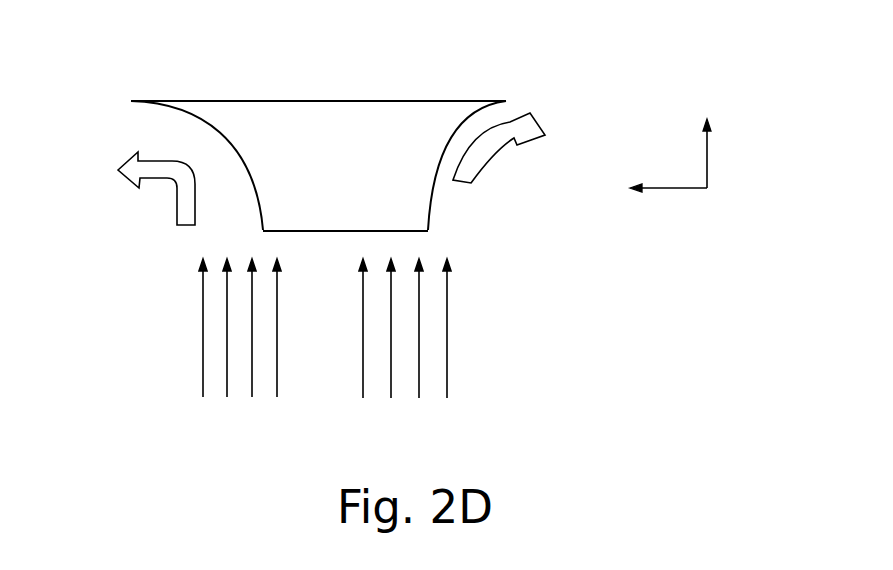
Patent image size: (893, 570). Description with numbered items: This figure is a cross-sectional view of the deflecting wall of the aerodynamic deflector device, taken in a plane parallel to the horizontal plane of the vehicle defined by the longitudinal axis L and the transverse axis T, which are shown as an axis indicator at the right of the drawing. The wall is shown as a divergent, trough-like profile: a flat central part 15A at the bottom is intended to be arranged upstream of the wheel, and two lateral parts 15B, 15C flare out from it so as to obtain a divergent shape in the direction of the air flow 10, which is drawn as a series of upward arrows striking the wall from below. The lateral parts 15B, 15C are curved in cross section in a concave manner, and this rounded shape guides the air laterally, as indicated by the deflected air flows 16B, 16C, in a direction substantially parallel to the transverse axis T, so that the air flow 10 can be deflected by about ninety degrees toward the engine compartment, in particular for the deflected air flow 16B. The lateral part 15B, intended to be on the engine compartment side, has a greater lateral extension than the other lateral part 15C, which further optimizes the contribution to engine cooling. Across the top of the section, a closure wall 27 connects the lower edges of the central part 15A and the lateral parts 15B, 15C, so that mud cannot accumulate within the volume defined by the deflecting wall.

The closure wall 27 is at (380, 100).
The central part 15A is at (330, 233).
The lateral part 15B is at (263, 230).
The lateral part 15C is at (428, 212).
The deflected air flow 16B is at (178, 200).
The deflected air flow 16C is at (512, 120).
The air flow 10 is at (202, 327).
The longitudinal axis L is at (707, 155).
The transverse axis T is at (667, 188).